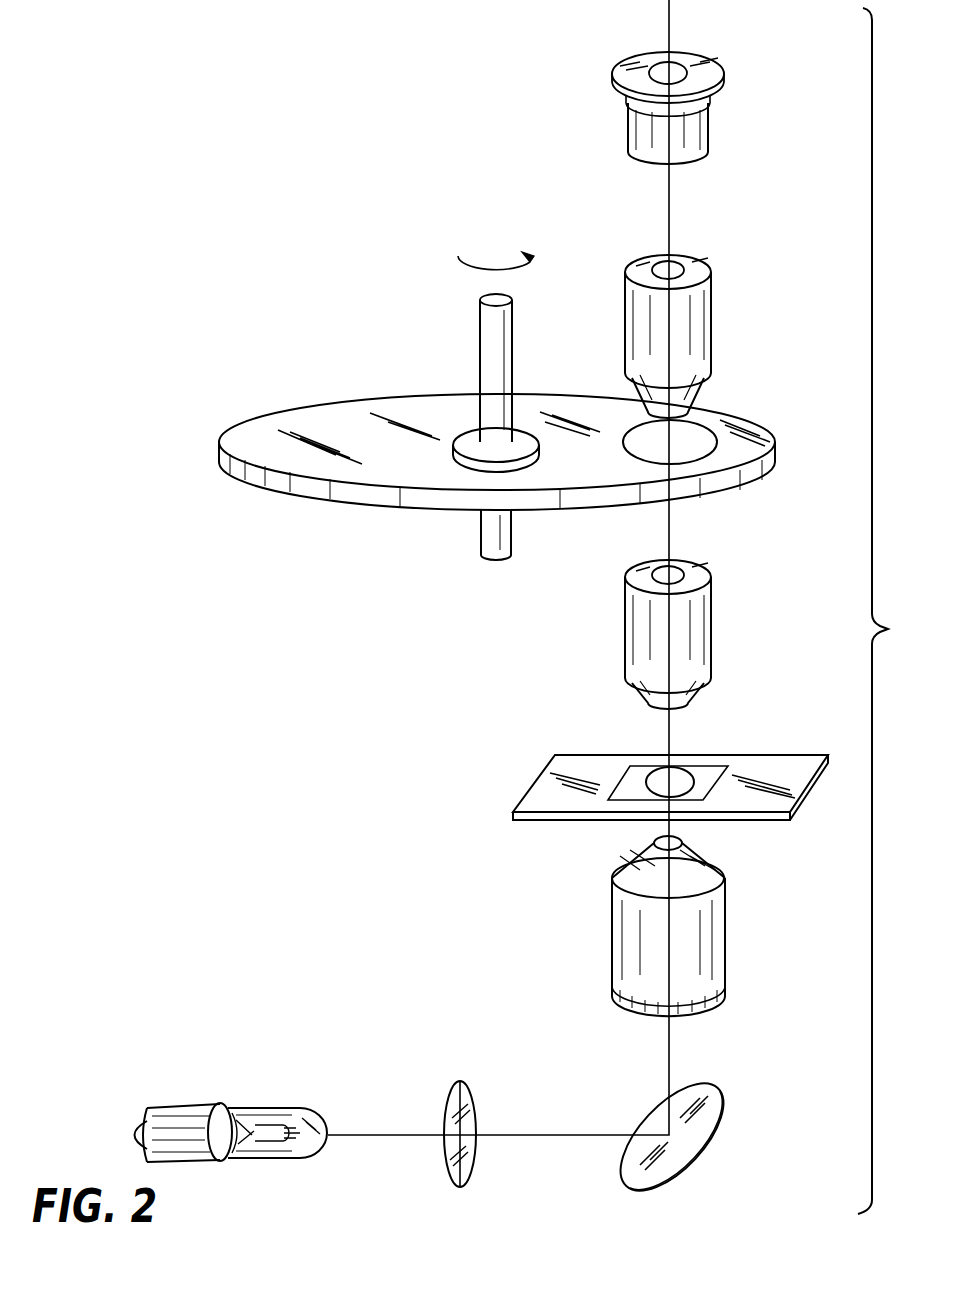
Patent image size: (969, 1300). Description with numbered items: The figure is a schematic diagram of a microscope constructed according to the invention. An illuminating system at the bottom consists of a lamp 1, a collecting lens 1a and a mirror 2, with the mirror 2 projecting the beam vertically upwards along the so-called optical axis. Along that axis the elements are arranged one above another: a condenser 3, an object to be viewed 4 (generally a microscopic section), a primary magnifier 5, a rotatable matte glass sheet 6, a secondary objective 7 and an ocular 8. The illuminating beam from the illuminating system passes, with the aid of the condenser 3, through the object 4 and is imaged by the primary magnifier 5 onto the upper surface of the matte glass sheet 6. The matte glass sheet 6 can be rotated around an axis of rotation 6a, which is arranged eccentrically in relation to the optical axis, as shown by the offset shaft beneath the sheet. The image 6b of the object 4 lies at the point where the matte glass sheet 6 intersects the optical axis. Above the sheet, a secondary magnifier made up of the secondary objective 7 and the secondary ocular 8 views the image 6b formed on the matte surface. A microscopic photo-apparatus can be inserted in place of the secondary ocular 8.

The lamp 1 is at (270, 1120).
The collecting lens 1a is at (458, 1108).
The mirror 2 is at (712, 1098).
The condenser 3 is at (727, 921).
The object to be viewed 4 is at (685, 775).
The primary magnifier 5 is at (700, 612).
The rotatable matte glass sheet 6 is at (780, 475).
The axis of rotation 6a is at (478, 548).
The image of object 6b is at (703, 430).
The secondary objective 7 is at (712, 335).
The ocular 8 is at (706, 127).